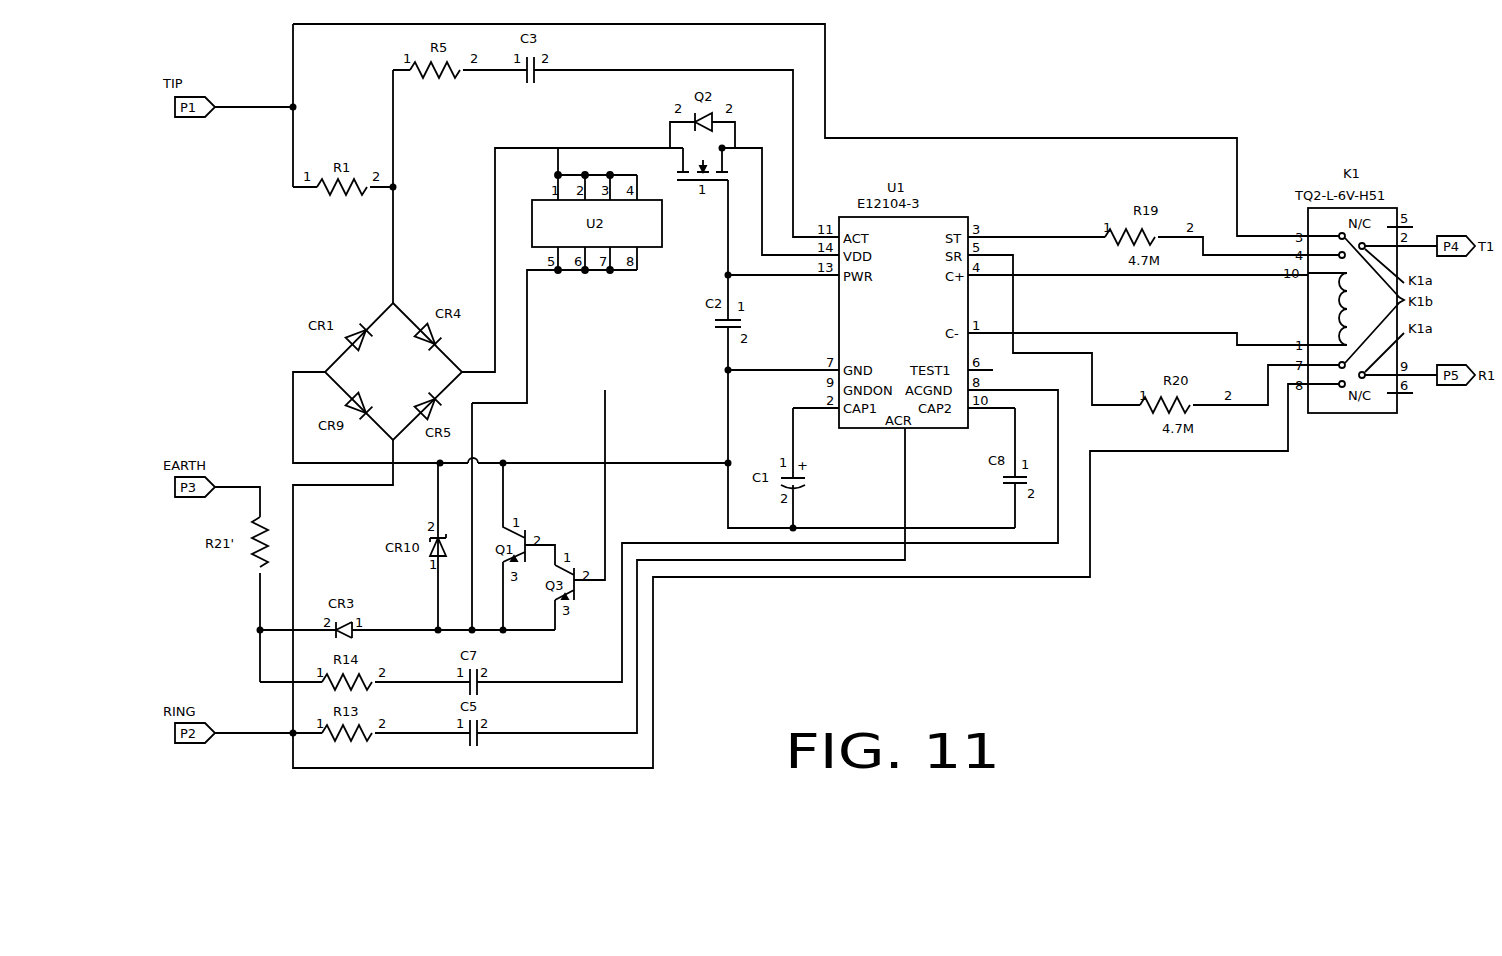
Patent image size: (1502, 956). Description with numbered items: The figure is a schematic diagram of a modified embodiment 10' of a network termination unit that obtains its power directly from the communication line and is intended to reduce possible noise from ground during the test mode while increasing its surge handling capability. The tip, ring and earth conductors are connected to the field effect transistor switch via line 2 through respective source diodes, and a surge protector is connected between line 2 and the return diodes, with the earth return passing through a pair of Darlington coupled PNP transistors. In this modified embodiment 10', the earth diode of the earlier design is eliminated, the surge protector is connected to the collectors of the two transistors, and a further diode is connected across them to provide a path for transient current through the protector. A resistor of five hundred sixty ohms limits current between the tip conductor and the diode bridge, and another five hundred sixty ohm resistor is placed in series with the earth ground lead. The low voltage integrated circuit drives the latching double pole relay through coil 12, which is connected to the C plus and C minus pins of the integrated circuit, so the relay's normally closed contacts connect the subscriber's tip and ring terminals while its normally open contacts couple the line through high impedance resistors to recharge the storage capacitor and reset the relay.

The line 2 is at (590, 146).
The modified embodiment of network termination unit 10' is at (1348, 250).
The coil 12 is at (1330, 318).